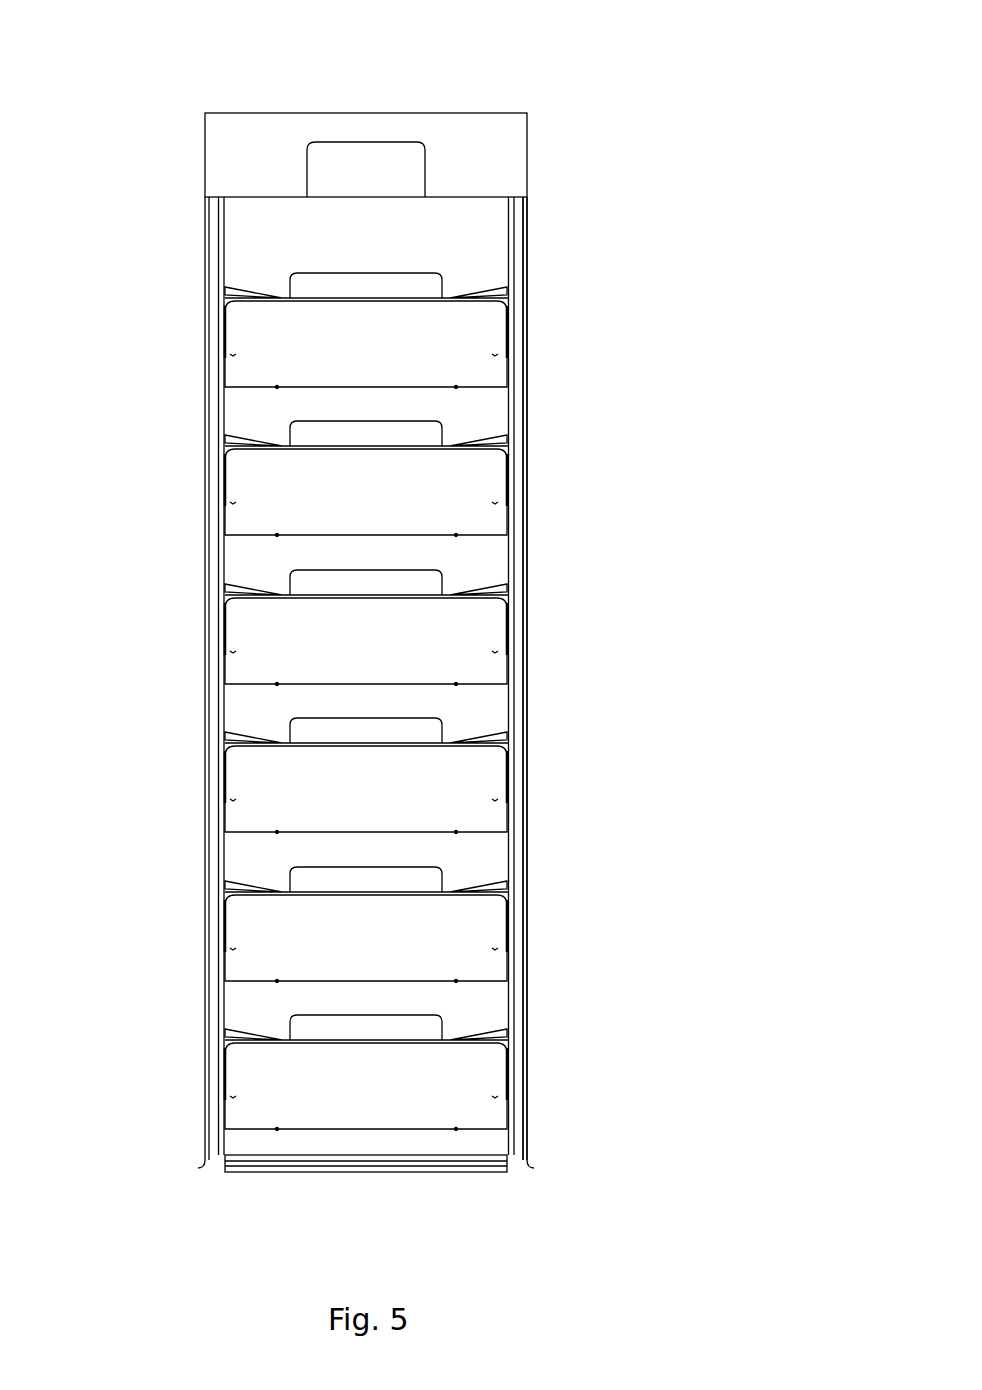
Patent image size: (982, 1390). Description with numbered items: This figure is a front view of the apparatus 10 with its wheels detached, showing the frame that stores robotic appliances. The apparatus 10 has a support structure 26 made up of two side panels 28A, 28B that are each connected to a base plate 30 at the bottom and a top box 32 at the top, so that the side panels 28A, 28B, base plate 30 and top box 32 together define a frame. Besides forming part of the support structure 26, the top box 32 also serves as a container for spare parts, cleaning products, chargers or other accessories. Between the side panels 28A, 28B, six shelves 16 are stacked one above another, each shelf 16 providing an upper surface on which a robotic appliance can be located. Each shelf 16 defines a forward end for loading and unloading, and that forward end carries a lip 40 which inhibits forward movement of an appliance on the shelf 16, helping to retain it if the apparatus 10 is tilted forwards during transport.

The apparatus 10 is at (671, 150).
The shelf 16 is at (252, 325).
The support structure 26 is at (527, 262).
The side panel 28A is at (515, 238).
The side panel 28B is at (217, 248).
The base plate 30 is at (243, 1170).
The top box 32 is at (263, 137).
The lip 40 is at (425, 283).